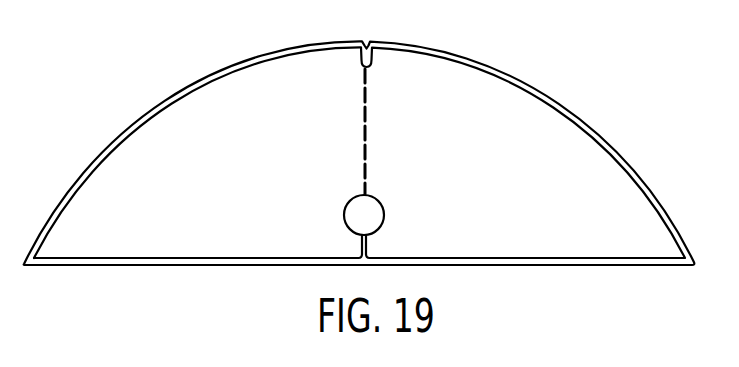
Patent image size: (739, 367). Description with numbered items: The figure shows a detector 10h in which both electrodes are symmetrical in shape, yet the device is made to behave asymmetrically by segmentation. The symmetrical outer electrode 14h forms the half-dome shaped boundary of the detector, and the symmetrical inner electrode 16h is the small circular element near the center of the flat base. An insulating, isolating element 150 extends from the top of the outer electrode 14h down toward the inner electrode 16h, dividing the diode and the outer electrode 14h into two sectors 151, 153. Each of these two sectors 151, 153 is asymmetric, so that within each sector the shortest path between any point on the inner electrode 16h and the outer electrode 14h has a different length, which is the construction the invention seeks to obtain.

The detector 10h is at (293, 28).
The outer electrode 14h is at (539, 87).
The insulating, isolating element 150 is at (372, 66).
The sector 151 is at (229, 175).
The sector 153 is at (510, 178).
The inner electrode 16h is at (344, 208).